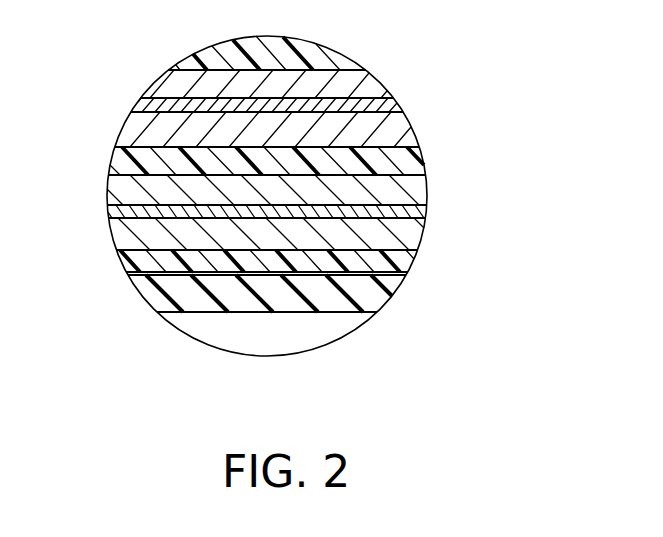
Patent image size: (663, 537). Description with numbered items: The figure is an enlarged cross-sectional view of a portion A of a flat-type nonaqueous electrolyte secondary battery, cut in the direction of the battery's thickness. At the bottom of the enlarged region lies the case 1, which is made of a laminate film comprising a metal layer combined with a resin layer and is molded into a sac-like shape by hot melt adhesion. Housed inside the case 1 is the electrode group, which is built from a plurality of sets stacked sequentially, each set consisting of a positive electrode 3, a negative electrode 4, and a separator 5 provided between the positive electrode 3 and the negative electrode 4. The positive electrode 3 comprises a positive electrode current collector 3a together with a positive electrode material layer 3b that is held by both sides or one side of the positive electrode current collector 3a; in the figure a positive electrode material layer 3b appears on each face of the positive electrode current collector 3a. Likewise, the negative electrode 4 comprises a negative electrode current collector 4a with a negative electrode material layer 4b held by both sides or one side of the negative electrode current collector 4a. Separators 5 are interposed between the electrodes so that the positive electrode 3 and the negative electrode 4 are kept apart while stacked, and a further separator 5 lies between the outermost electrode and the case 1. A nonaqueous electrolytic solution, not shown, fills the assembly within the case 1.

The case 1 is at (373, 300).
The positive electrode 3 is at (326, 106).
The positive electrode current collector 3a is at (390, 104).
The positive electrode material layer 3b is at (367, 83).
The negative electrode 4 is at (315, 223).
The negative electrode current collector 4a is at (413, 212).
The negative electrode material layer 4b is at (412, 189).
The separator 5 is at (198, 58).
The portion A is at (312, 352).